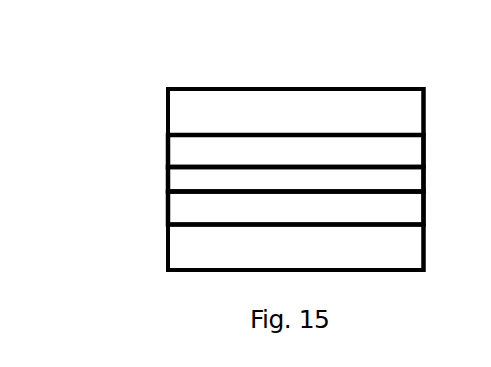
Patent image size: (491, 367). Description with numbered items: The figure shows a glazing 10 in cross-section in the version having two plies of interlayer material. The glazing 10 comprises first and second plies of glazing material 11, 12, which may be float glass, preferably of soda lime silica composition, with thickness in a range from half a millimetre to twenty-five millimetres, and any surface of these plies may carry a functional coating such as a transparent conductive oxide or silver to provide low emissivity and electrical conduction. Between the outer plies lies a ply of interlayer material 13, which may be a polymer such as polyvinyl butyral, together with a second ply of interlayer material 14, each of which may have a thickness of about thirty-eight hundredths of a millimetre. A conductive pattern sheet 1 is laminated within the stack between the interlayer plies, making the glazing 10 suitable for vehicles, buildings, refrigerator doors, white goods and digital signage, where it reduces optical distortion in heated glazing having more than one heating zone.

The glazing 10 is at (122, 50).
The second ply of glazing material 12 is at (166, 108).
The second ply of interlayer material 14 is at (166, 152).
The conductive pattern sheet 1 is at (166, 180).
The ply of interlayer material 13 is at (166, 209).
The first ply of glazing material 11 is at (166, 248).